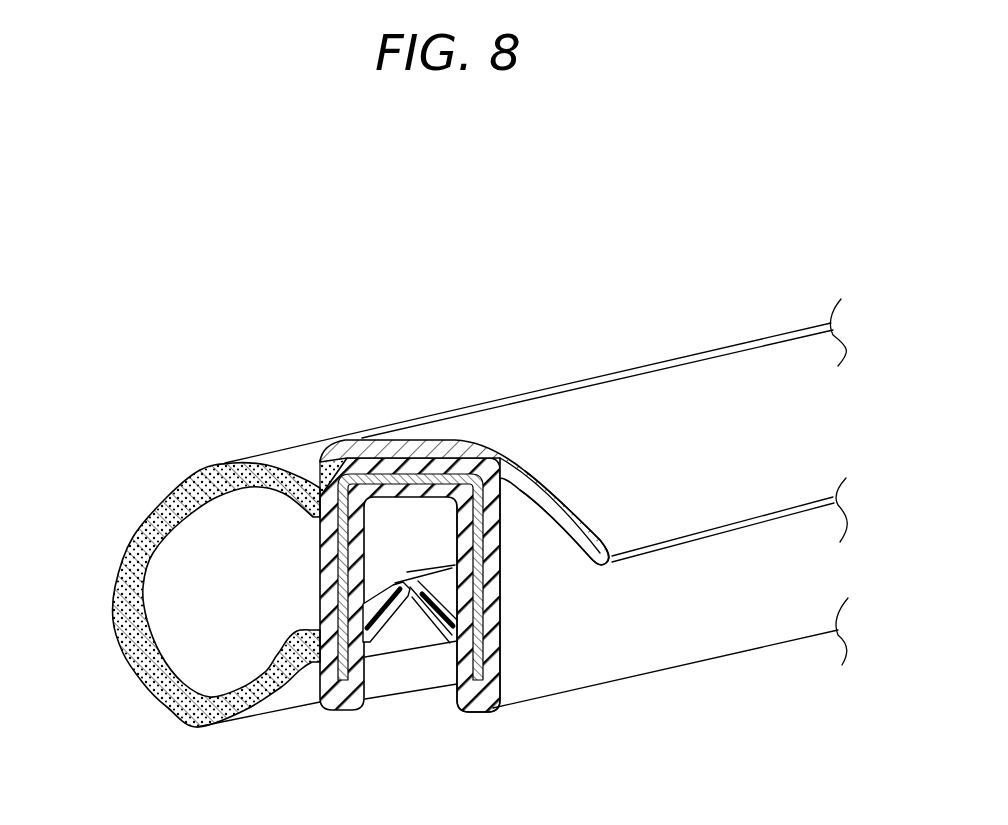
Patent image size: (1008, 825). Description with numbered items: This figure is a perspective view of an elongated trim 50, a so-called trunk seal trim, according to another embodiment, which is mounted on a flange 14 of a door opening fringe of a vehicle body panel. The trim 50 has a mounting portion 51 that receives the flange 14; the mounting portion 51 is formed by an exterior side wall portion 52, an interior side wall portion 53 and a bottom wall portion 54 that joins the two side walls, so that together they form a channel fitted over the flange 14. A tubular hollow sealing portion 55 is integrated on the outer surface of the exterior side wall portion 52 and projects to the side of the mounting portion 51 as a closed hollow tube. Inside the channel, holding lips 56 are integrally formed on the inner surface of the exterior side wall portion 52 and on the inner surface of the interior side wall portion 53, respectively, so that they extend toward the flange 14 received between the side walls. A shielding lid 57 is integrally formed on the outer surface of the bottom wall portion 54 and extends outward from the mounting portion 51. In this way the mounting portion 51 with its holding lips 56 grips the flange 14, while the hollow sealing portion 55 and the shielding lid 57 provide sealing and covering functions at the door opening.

The flange 14 is at (500, 640).
The elongated trim 50 is at (299, 422).
The mounting portion 51 is at (501, 502).
The exterior side wall portion 52 is at (319, 578).
The interior side wall portion 53 is at (500, 593).
The bottom wall portion 54 is at (420, 452).
The tubular hollow sealing portion 55 is at (141, 512).
The holding lips 56 is at (398, 617).
The shielding lid 57 is at (557, 486).